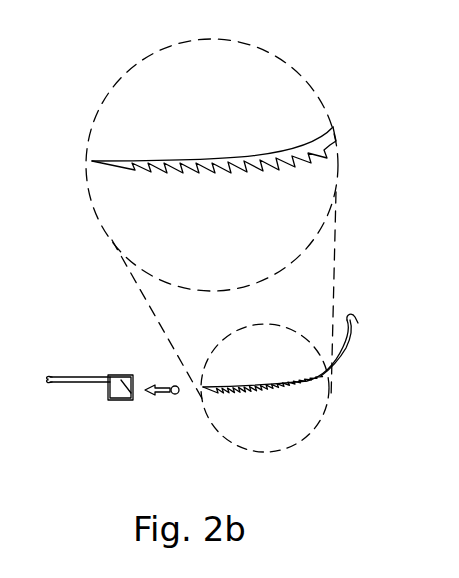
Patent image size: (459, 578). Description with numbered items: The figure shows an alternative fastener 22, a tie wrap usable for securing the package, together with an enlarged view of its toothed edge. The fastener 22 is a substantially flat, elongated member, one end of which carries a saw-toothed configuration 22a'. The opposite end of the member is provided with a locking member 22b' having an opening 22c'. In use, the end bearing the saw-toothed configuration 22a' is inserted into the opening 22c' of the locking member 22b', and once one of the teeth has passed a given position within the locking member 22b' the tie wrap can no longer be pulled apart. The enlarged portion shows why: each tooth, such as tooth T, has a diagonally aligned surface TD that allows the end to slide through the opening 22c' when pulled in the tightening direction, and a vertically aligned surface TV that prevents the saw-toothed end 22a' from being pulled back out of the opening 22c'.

The fastener 22 is at (262, 319).
The saw-toothed configuration 22a' is at (214, 175).
The diagonally aligned surface TD is at (208, 174).
The tooth T is at (215, 174).
The vertically aligned surface TV is at (220, 175).
The opening 22c' is at (75, 352).
The locking member 22b' is at (77, 422).